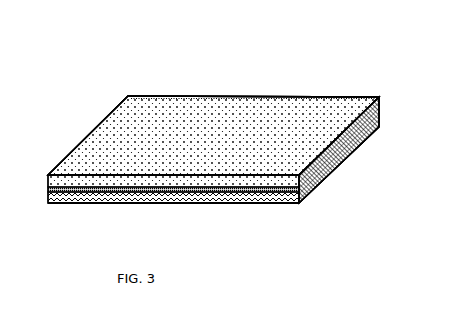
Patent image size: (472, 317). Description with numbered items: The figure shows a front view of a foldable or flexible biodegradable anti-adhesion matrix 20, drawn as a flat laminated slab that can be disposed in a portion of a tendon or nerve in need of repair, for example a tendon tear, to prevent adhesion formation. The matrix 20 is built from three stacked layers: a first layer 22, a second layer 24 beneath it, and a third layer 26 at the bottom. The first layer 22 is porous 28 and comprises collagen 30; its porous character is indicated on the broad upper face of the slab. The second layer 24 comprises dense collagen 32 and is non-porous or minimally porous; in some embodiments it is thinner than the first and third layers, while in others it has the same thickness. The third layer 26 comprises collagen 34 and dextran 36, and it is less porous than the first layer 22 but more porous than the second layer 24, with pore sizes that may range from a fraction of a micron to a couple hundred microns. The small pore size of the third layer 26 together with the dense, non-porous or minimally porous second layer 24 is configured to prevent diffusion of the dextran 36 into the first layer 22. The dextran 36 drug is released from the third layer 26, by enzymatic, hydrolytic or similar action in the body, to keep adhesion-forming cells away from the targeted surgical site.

The foldable or flexible biodegradable matrix 20 is at (131, 84).
The first layer 22 is at (246, 110).
The second layer 24 is at (317, 176).
The third layer 26 is at (283, 213).
The porous 28 is at (306, 107).
The collagen 30 is at (118, 127).
The dense collagen 32 is at (381, 112).
The collagen 34 is at (180, 204).
The dextran 36 is at (107, 204).